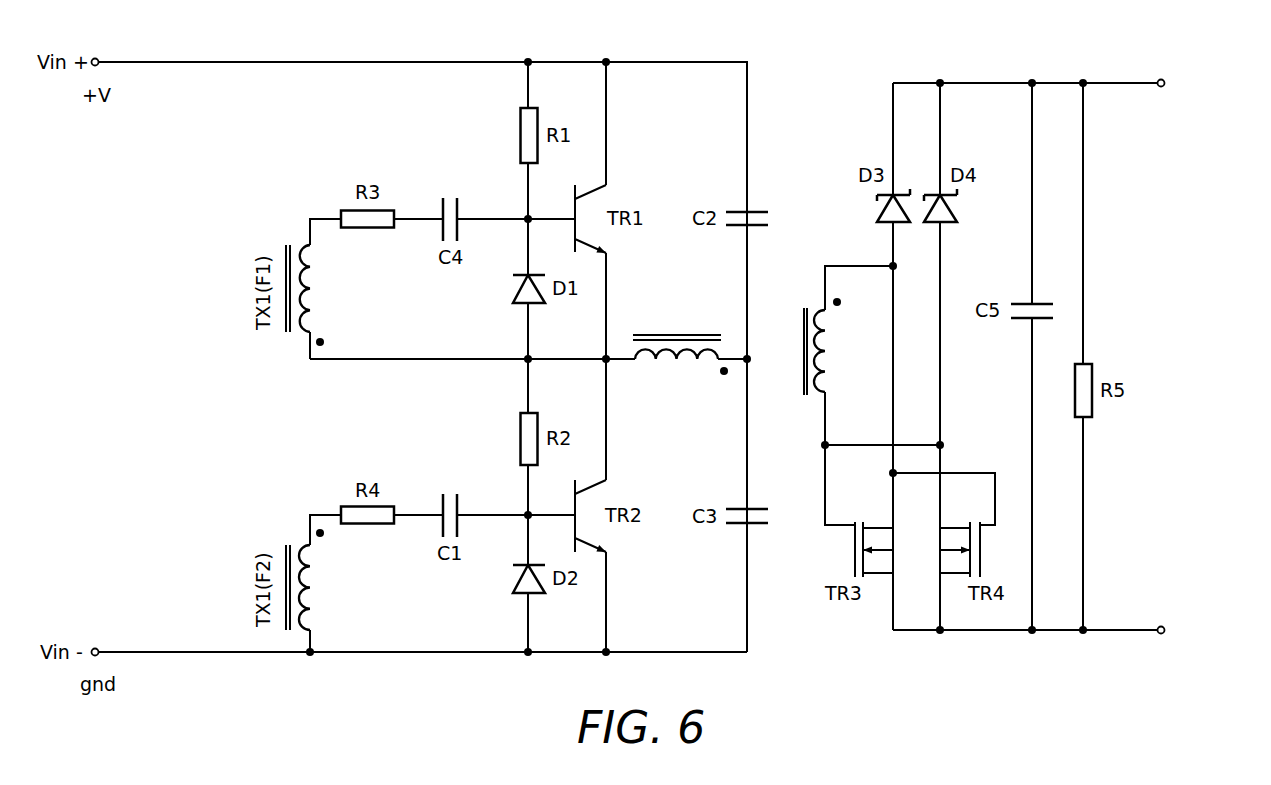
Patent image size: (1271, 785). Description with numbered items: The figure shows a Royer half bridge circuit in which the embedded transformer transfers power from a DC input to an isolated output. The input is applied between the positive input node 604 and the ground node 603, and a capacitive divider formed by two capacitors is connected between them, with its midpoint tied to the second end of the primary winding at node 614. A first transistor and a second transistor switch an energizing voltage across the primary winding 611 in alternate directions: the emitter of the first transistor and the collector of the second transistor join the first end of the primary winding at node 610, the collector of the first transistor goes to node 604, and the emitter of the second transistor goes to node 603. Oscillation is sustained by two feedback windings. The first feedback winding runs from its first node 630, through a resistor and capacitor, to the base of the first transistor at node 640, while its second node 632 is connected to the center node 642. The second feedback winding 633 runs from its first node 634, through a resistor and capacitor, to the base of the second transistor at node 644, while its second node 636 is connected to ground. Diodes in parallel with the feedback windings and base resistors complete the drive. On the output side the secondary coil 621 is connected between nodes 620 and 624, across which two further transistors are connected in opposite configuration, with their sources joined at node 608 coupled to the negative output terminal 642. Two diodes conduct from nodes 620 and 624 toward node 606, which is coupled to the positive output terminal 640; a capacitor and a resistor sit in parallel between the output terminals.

The ground node 603 is at (528, 655).
The positive input node 604 is at (528, 58).
The rectifier output node 606 is at (940, 80).
The source node 608 is at (940, 633).
The first end of primary winding 610 is at (607, 362).
The primary winding 611 is at (662, 340).
The second end of primary winding 614 is at (750, 355).
The first secondary node 620 is at (838, 262).
The secondary coil 621 is at (825, 380).
The second secondary node 624 is at (825, 445).
The first node of first feedback winding 630 is at (310, 212).
The second node of first feedback winding 632 is at (310, 363).
The second feedback winding 633 is at (313, 575).
The first node of second feedback winding 634 is at (311, 510).
The second node of second feedback winding 636 is at (310, 655).
The base node of TR1 / first output terminal 640 is at (528, 219).
The center node / second output terminal 642 is at (528, 359).
The base node of TR2 644 is at (528, 515).